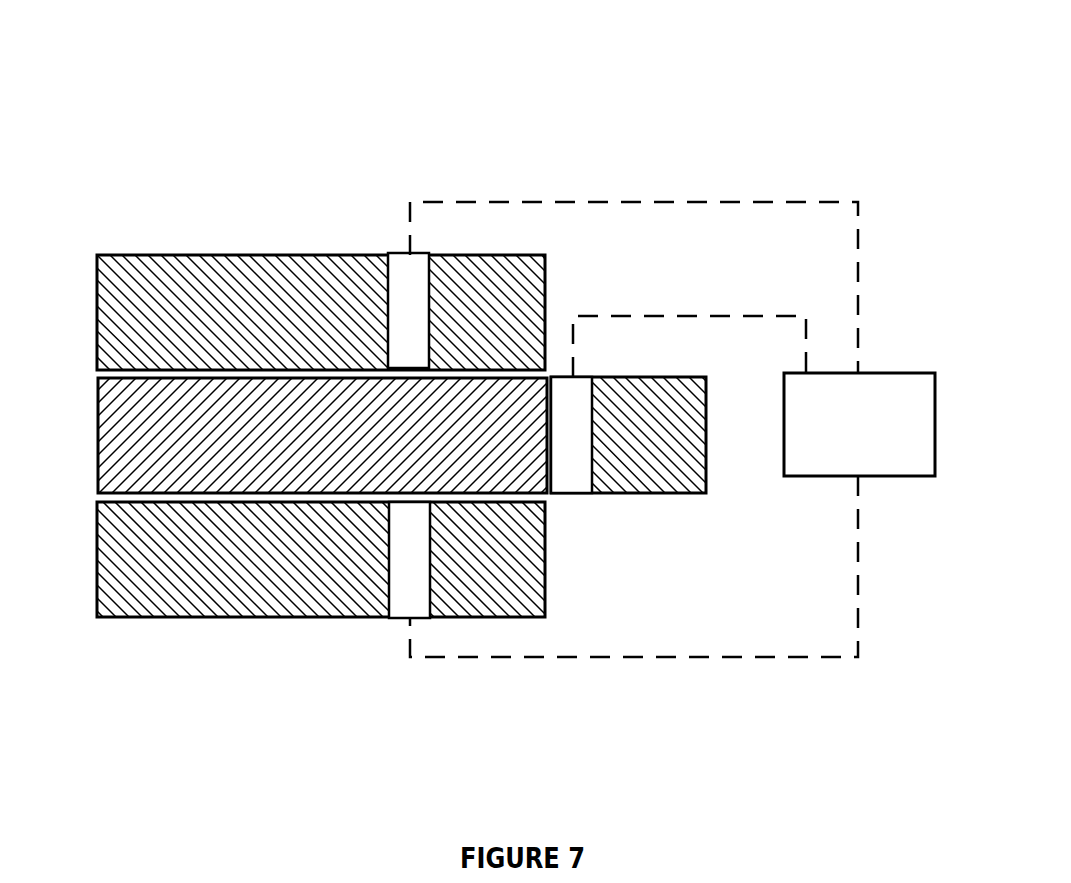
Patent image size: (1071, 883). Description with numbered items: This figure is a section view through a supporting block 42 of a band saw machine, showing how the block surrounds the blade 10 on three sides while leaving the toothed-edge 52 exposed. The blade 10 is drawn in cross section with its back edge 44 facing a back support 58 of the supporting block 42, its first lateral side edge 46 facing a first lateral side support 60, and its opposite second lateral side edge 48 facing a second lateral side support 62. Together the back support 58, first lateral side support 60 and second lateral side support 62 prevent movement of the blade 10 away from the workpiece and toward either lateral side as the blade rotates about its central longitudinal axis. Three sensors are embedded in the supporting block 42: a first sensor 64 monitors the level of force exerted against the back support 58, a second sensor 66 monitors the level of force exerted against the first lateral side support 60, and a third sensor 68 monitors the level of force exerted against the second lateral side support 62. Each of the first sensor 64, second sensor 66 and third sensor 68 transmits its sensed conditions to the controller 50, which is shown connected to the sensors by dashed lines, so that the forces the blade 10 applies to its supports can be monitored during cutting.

The blade 10 is at (204, 440).
The supporting block 42 is at (217, 683).
The back edge 44 is at (547, 377).
The first lateral side edge 46 is at (303, 377).
The second lateral side edge 48 is at (282, 493).
The controller 50 is at (866, 437).
The toothed-edge 52 is at (97, 430).
The back support 58 is at (670, 463).
The first lateral side support 60 is at (352, 282).
The second lateral side support 62 is at (148, 595).
The first sensor 64 is at (580, 417).
The second sensor 66 is at (396, 287).
The third sensor 68 is at (400, 588).